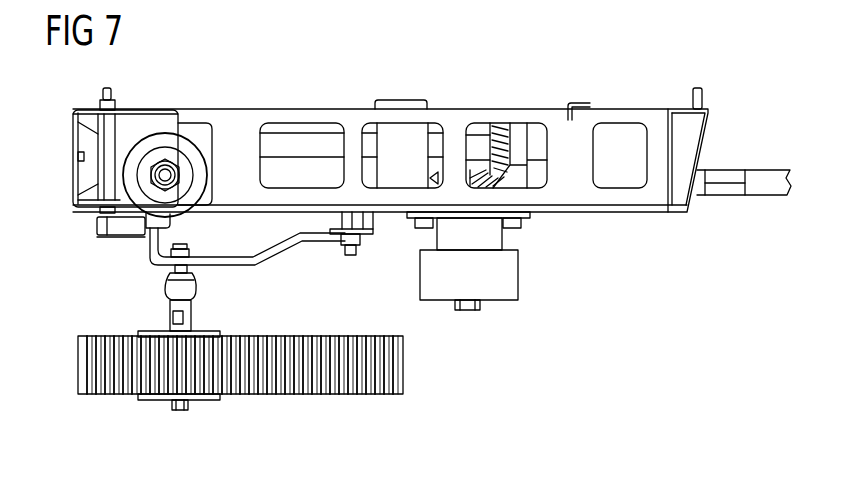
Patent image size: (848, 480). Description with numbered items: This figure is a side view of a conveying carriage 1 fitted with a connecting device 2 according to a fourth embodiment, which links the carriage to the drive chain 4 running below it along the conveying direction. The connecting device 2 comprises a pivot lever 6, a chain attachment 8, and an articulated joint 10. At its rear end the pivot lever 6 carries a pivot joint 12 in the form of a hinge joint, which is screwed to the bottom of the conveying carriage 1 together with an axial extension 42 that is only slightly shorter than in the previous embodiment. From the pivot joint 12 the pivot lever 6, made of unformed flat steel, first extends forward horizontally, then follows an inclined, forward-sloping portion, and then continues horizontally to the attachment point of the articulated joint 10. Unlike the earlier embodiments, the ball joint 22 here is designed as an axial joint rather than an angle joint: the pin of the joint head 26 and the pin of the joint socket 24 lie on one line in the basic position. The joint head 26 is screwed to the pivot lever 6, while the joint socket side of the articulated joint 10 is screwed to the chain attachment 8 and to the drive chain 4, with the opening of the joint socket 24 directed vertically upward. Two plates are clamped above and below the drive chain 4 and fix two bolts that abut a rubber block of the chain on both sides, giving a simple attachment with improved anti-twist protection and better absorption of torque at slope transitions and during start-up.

The conveying carriage 1 is at (312, 83).
The connecting device 2 is at (132, 278).
The drive chain 4 is at (353, 388).
The pivot lever 6 is at (266, 257).
The chain attachment 8 is at (208, 399).
The articulated joint 10 is at (183, 309).
The pivot joint 12 is at (348, 258).
The ball joint 22 is at (150, 310).
The joint socket 24 is at (188, 283).
The joint head 26 is at (189, 246).
The axial extension 42 is at (367, 214).